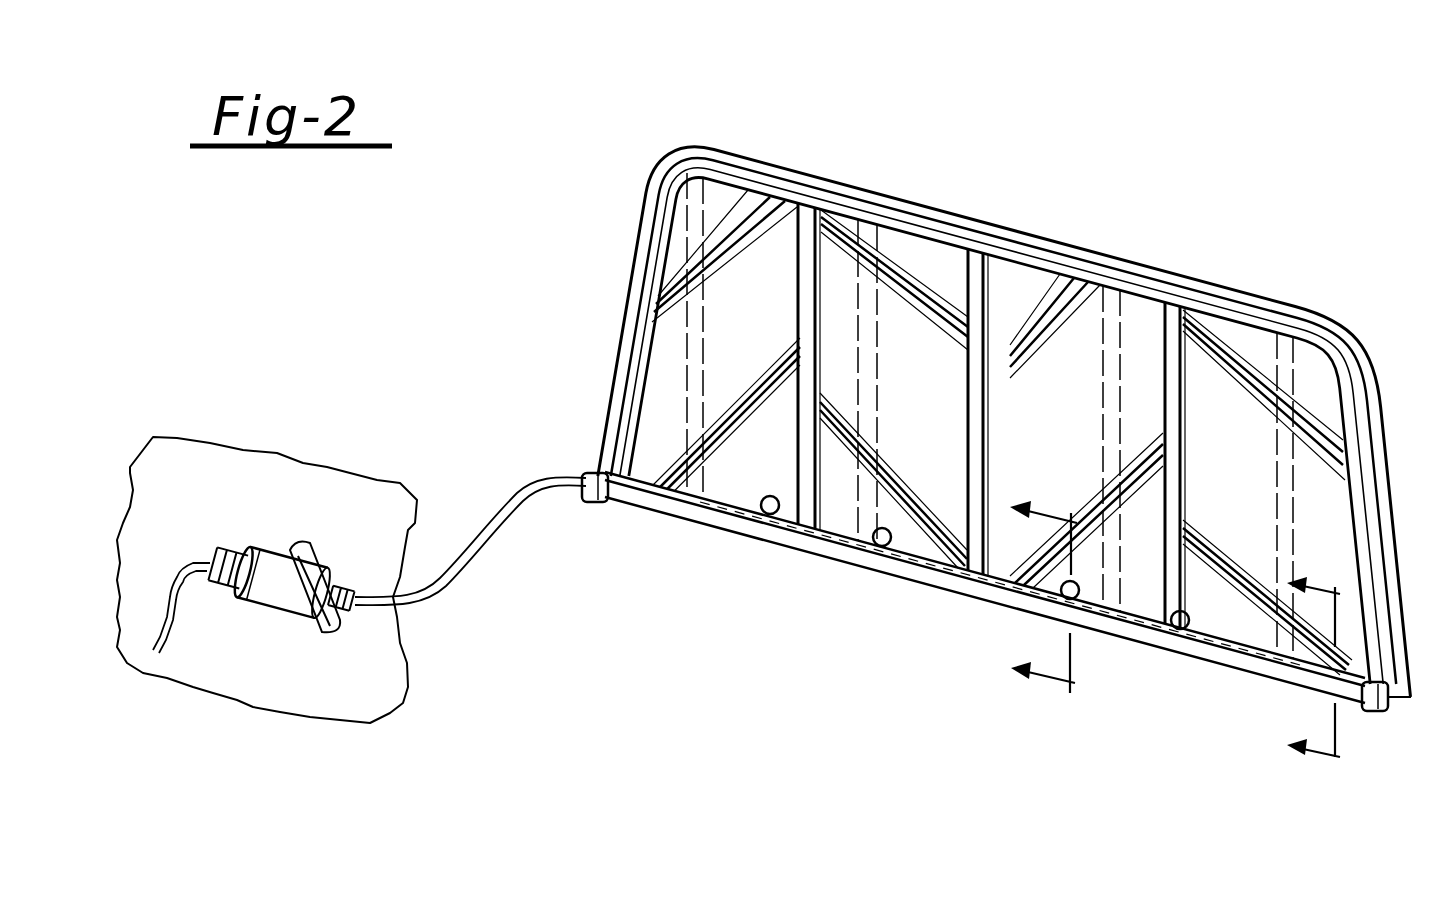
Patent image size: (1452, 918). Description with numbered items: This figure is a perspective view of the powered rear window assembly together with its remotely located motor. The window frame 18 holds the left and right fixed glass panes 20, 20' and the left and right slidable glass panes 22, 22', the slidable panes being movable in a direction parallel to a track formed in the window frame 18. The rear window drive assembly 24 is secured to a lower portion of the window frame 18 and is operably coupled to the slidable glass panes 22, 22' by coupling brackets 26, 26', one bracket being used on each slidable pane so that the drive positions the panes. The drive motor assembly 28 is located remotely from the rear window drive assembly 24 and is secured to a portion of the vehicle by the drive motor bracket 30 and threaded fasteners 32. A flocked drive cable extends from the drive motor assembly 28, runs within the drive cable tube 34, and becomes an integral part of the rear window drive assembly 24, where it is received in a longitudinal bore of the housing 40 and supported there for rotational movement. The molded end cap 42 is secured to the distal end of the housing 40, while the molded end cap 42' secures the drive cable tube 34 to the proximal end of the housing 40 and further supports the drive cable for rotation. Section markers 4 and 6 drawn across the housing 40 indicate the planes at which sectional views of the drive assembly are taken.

The window frame 18 is at (1032, 242).
The left fixed glass pane 20 is at (1258, 448).
The right fixed glass pane 20' is at (739, 302).
The left slidable glass pane 22 is at (1117, 390).
The right slidable glass pane 22' is at (916, 349).
The rear window drive assembly 24 is at (716, 572).
The coupling bracket 26 is at (1107, 647).
The coupling bracket 26' is at (832, 579).
The drive motor assembly 28 is at (255, 642).
The drive motor bracket 30 is at (315, 547).
The threaded fasteners 32 is at (290, 543).
The drive cable tube 34 is at (507, 500).
The housing 40 is at (670, 503).
The molded end cap 42 is at (1405, 727).
The molded end cap 42' is at (576, 519).
The section line 4- 4 is at (1043, 597).
The section line 6- 6 is at (1313, 675).